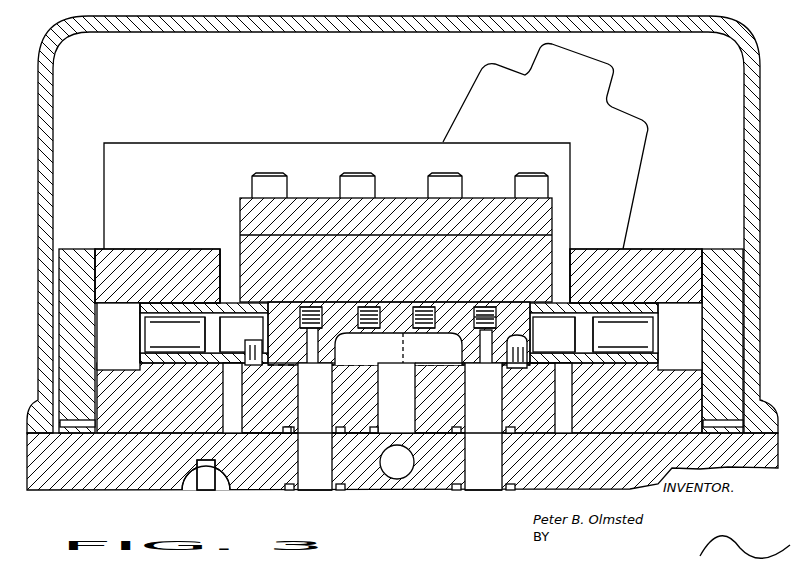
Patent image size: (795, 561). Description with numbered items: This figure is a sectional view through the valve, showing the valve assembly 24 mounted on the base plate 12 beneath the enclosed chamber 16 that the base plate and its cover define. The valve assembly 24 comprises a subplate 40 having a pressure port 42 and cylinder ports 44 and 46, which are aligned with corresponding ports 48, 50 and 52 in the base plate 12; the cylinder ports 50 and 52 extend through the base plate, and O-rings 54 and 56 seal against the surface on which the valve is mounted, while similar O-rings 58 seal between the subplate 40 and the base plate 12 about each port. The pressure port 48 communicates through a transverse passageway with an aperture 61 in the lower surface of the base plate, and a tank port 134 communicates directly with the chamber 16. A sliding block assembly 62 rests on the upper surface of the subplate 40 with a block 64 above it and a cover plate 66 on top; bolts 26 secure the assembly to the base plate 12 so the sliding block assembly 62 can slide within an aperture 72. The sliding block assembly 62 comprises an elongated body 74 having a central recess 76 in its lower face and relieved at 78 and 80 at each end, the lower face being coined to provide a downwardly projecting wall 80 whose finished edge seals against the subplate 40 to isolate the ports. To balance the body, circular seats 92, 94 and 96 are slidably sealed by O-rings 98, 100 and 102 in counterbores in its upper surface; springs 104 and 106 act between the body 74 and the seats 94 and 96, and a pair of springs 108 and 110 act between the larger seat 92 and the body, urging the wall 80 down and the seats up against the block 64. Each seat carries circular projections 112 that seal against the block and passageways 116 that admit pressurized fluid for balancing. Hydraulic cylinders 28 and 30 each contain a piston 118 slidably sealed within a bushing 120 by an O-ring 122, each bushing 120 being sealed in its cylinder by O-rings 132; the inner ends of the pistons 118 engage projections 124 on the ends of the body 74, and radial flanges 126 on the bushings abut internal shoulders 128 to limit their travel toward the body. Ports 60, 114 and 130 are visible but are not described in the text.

The base plate 12 is at (610, 484).
The valve assembly 24 is at (321, 185).
The bolts 26 is at (268, 146).
The hydraulic cylinder 28 is at (188, 241).
The hydraulic cylinder 30 is at (677, 242).
The subplate 40 is at (548, 458).
The pressure port 42 is at (380, 408).
The cylinder port 44 is at (320, 402).
The cylinder port 46 is at (485, 400).
The pressure port 48 is at (375, 445).
The cylinder port 50 is at (285, 462).
The cylinder port 52 is at (470, 452).
The O-ring 54 is at (340, 488).
The O-ring 56 is at (465, 492).
The O-rings 58 is at (420, 412).
The port 60 is at (400, 480).
The aperture 61 is at (248, 362).
The sliding block assembly 62 is at (505, 303).
The block 64 is at (403, 240).
The cover plate 66 is at (490, 190).
The aperture 72 is at (250, 318).
The elongated body 74 is at (588, 318).
The central recess 76 is at (445, 345).
The relief 78 is at (275, 365).
The downwardly projecting wall 80 is at (325, 372).
The circular seat 92 is at (400, 303).
The circular seat 94 is at (306, 303).
The circular seat 96 is at (458, 303).
The O-ring 98 is at (280, 310).
The O-ring 100 is at (399, 333).
The O-ring 102 is at (440, 303).
The spring 104 is at (381, 345).
The spring 106 is at (478, 303).
The spring 108 is at (335, 305).
The spring 110 is at (430, 303).
The circular projections 112 is at (325, 305).
The valve stem 114 is at (318, 303).
The passageways 116 is at (400, 348).
The piston 118 is at (140, 330).
The bushing 120 is at (228, 300).
The O-ring 122 is at (185, 335).
The projections 124 is at (250, 342).
The radial flange 126 is at (130, 300).
The internal shoulder 128 is at (401, 341).
The lower block 130 is at (112, 375).
The O-rings 132 is at (398, 276).
The tank port 134 is at (212, 478).
The enclosed chamber 16 is at (503, 380).